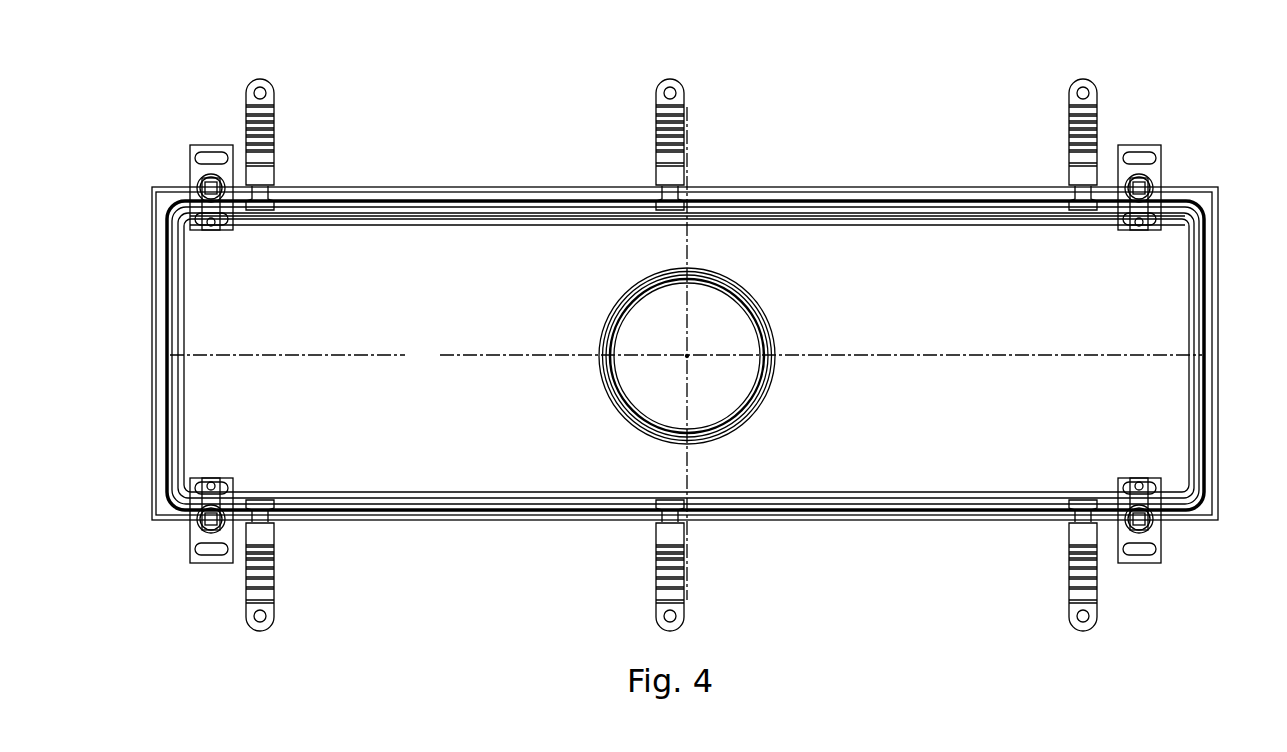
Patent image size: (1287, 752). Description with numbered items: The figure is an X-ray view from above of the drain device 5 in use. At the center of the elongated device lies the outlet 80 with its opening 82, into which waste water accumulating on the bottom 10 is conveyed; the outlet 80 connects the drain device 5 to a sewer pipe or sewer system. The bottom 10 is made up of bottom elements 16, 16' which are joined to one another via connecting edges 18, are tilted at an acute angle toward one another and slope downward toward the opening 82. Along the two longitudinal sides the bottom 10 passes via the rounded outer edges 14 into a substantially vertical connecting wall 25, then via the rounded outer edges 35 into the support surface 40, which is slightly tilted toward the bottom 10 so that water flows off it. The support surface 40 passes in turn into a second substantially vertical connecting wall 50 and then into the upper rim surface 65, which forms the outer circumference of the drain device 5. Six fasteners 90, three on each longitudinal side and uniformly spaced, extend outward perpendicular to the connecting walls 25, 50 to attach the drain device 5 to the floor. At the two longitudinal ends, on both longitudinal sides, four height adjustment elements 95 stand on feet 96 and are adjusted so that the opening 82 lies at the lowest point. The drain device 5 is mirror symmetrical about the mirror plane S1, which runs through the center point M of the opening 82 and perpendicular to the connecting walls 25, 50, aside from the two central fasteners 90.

The drain device 5 is at (497, 118).
The bottom 10 is at (437, 364).
The rounded outer edges 14 is at (775, 227).
The bottom element 16 is at (472, 292).
The bottom element 16' is at (478, 424).
The connecting edges 18 is at (947, 352).
The connecting wall 25 is at (815, 218).
The outer edges 35 is at (857, 221).
The support surface 40 is at (897, 215).
The connecting wall 50 is at (943, 209).
The upper rim surface 65 is at (986, 187).
The outlet 80 is at (618, 301).
The opening 82 is at (634, 347).
The center point M is at (688, 356).
The fasteners 90 is at (1083, 78).
The height adjustment elements 95 is at (1154, 184).
The feet 96 is at (1146, 146).
The mirror plane S1 is at (688, 580).